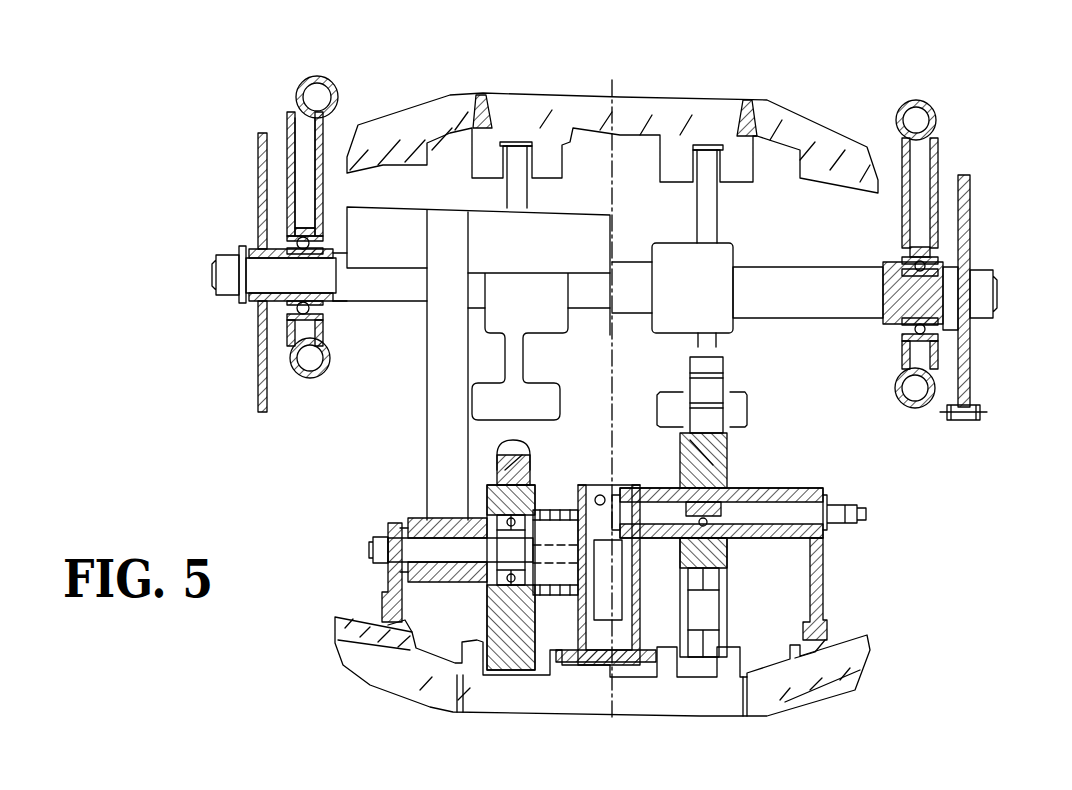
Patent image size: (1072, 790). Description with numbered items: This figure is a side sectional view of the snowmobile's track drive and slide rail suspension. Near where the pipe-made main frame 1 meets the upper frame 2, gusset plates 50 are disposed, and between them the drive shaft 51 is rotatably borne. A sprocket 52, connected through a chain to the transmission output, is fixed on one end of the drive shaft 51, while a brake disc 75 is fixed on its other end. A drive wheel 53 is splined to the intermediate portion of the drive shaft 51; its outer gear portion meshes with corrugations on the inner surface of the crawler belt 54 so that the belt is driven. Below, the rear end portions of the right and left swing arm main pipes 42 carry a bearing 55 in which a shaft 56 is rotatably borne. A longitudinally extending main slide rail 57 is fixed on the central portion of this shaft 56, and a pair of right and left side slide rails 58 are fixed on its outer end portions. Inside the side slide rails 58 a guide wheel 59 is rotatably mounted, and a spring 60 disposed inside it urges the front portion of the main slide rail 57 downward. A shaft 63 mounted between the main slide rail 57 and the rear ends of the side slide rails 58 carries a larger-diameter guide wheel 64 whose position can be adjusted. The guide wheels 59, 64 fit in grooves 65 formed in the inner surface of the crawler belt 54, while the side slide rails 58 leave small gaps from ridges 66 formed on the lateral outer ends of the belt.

The main frame 1 is at (310, 378).
The upper frame 2 is at (304, 78).
The swing arm main pipe 42 is at (432, 366).
The gusset plate 50 is at (290, 128).
The drive shaft 51 is at (806, 277).
The sprocket 52 is at (970, 207).
The drive wheel 53 is at (516, 160).
The crawler belt 54 is at (641, 110).
The bearing 55 is at (421, 520).
The shaft 56 is at (384, 540).
The main slide rail 57 is at (616, 667).
The side slide rail 58 is at (388, 586).
The guide wheel 59 is at (531, 463).
The spring 60 is at (540, 598).
The shaft 63 is at (822, 512).
The guide wheel 64 is at (735, 463).
The groove 65 is at (500, 675).
The ridge 66 is at (388, 642).
The brake disc 75 is at (257, 374).